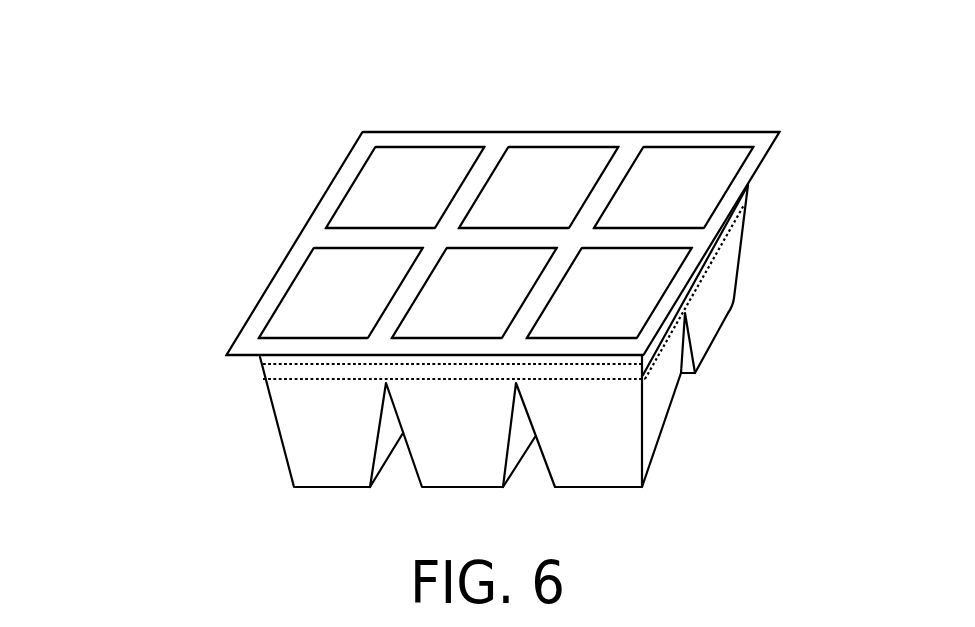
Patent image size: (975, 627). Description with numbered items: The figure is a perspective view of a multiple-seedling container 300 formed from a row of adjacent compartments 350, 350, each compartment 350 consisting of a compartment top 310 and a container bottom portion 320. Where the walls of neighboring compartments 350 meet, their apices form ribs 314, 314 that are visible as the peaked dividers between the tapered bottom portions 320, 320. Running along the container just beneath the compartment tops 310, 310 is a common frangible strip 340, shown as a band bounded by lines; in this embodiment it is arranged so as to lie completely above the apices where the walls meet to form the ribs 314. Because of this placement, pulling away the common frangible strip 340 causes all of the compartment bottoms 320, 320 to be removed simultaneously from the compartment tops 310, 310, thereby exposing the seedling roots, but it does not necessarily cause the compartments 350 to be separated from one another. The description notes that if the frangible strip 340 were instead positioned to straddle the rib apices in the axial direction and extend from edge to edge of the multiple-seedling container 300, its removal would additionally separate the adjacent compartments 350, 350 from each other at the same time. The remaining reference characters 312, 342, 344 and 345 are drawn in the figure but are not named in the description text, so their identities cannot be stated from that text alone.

The multiple-seedling container 300 is at (928, 43).
The compartment top 310 is at (280, 358).
The frame of cover plate 312 is at (400, 138).
The rib 314 is at (490, 160).
The container bottom portion 320 is at (302, 400).
The common frangible strip 340 is at (277, 373).
The lower film layer 342 is at (590, 383).
The upper film layer 344 is at (562, 358).
The adhesive layer 345 is at (440, 364).
The compartment 350 is at (120, 335).